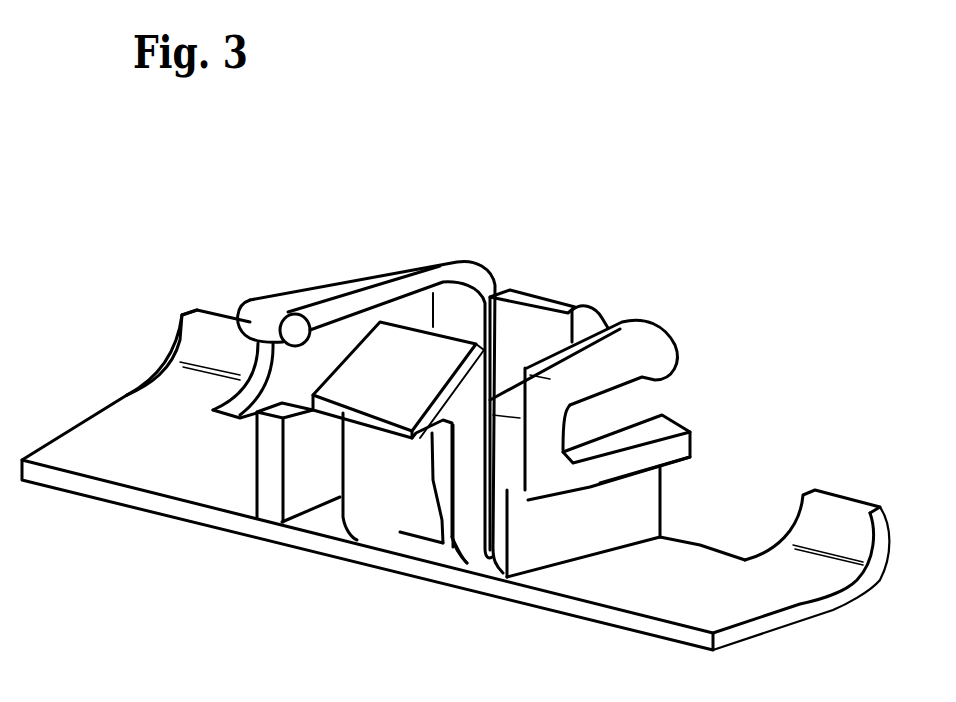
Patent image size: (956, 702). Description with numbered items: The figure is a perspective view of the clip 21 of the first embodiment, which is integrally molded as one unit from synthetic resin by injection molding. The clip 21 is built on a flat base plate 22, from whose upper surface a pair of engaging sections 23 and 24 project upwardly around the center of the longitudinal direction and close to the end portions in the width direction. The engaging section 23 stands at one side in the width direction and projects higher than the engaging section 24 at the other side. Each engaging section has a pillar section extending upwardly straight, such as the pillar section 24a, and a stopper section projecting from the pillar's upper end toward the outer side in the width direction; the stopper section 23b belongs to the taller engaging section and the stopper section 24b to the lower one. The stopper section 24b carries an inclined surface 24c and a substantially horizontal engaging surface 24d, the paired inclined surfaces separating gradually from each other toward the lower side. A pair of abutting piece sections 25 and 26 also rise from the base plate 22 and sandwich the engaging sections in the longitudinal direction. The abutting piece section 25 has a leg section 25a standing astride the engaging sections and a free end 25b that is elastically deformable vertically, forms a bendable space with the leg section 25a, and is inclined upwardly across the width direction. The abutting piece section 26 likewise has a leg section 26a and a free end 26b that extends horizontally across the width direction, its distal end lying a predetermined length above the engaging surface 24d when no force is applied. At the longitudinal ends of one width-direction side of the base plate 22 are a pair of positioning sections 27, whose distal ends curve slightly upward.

The clip 21 is at (558, 207).
The base plate 22 is at (678, 602).
The engaging section 23 is at (582, 399).
The stopper section 23b is at (588, 322).
The engaging section 24 is at (315, 419).
The pillar section 24a is at (397, 507).
The stopper section 24b is at (337, 412).
The inclined surface 24c is at (372, 378).
The engaging surface 24d is at (439, 580).
The abutting piece section 25 is at (673, 427).
The leg section 25a is at (648, 497).
The free end 25b is at (668, 358).
The abutting piece section 26 is at (340, 368).
The leg section 26a is at (297, 403).
The free end 26b is at (352, 300).
The positioning section 27 is at (193, 330).